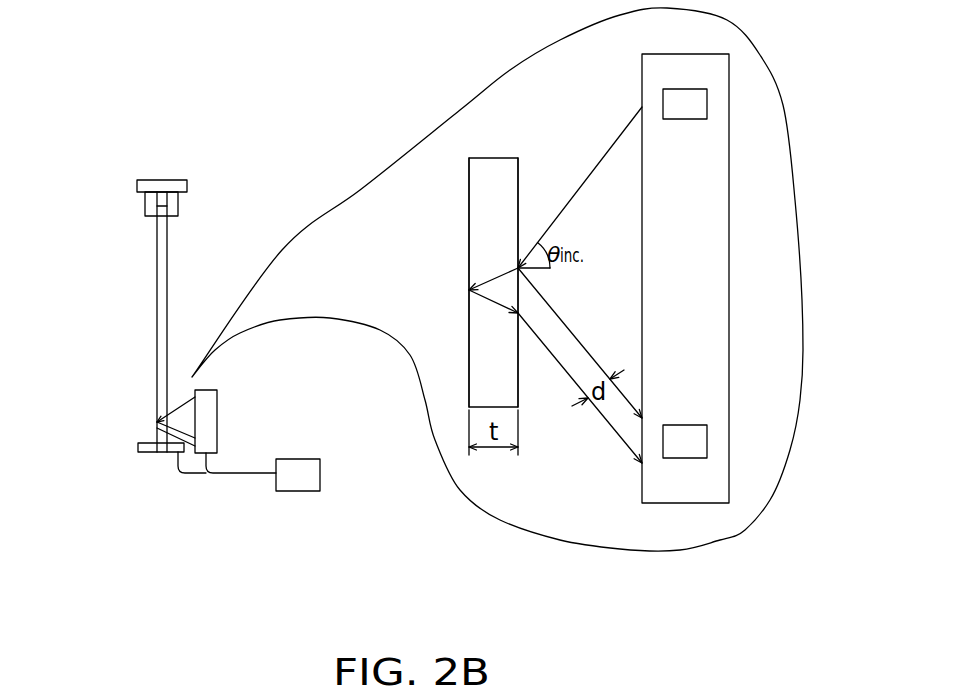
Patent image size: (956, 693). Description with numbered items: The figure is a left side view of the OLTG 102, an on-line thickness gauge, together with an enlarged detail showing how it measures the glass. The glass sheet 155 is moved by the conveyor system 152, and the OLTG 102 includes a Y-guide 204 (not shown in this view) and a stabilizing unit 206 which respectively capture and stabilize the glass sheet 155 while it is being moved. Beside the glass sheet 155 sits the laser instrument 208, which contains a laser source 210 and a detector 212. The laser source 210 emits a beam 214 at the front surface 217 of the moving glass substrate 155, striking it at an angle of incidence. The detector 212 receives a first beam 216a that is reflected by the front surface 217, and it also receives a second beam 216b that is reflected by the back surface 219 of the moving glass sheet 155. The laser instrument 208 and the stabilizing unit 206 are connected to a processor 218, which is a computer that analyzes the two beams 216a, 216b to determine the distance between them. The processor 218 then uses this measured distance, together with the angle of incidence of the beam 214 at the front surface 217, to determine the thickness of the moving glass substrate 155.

The OLTG 102 is at (306, 408).
The conveyor system 152 is at (162, 179).
The glass sheet 155 is at (167, 267).
The Y-guide 204 is at (185, 569).
The stabilizing unit 206 is at (153, 453).
The laser instrument 208 is at (217, 413).
The laser source 210 is at (685, 103).
The detector 212 is at (685, 441).
The beam 214 is at (565, 210).
The first beam 216a is at (563, 222).
The second beam 216b is at (612, 433).
The front surface 217 is at (519, 170).
The processor 218 is at (298, 475).
The back surface 219 is at (469, 241).